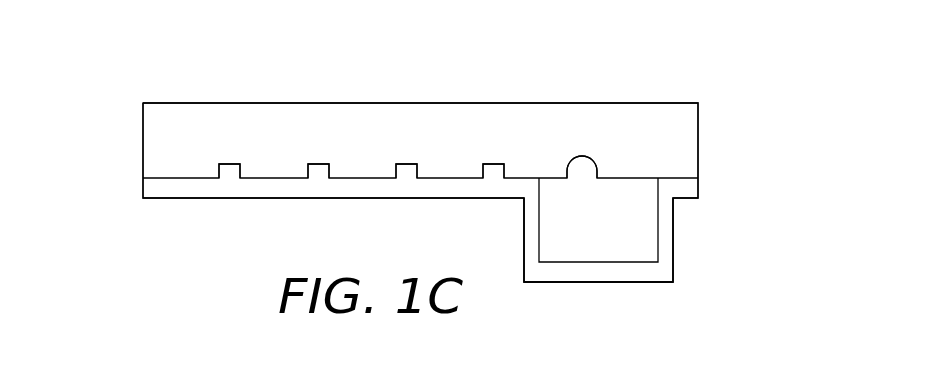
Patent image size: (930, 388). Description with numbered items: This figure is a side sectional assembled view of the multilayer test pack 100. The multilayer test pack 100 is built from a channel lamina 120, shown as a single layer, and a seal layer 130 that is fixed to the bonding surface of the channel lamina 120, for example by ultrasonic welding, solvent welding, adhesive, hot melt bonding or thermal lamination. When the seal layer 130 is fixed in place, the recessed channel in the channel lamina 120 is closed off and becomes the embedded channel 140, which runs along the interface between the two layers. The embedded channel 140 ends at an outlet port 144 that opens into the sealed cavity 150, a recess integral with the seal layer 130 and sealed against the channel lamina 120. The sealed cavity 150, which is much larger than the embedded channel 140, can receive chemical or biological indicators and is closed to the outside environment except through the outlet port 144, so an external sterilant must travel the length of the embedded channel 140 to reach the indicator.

The multilayer test pack 100 is at (686, 50).
The channel lamina 120 is at (155, 137).
The seal layer 130 is at (160, 188).
The embedded channel 140 is at (228, 170).
The outlet port 144 is at (581, 168).
The sealed cavity 150 is at (705, 250).